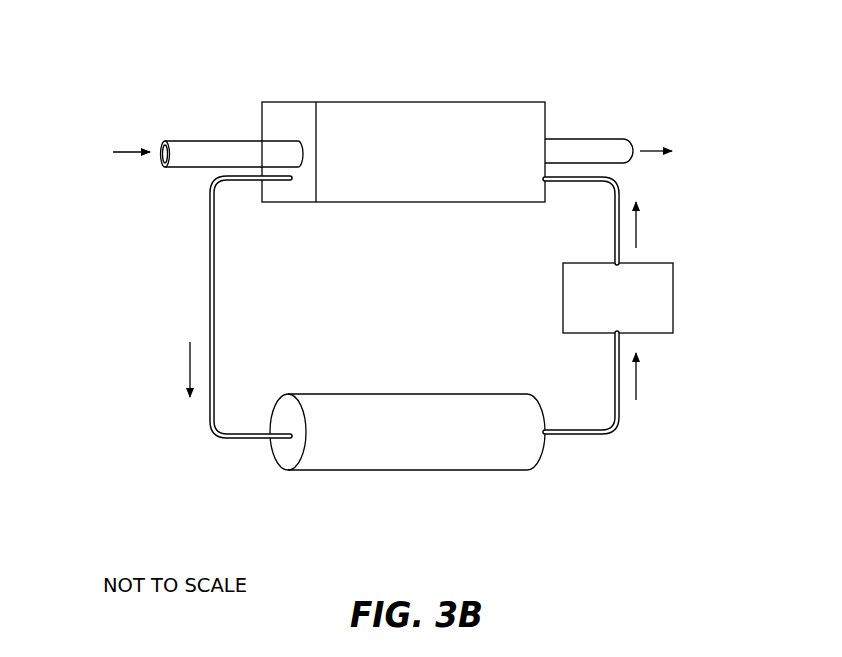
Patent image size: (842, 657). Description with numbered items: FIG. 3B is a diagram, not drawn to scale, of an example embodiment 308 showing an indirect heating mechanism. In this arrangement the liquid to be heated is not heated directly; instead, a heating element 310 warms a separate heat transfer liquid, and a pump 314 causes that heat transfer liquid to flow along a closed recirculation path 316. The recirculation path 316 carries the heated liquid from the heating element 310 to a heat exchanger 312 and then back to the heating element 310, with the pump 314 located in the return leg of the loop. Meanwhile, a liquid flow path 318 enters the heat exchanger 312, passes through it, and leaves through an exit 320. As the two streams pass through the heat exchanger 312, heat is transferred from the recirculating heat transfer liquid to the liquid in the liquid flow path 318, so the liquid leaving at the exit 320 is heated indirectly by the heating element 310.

The embodiment 308 is at (380, 320).
The heating element 310 is at (420, 470).
The heat exchanger 312 is at (407, 102).
The pump 314 is at (673, 296).
The recirculation path 316 is at (329, 307).
The liquid flow path 318 is at (165, 152).
The exit 320 is at (641, 153).